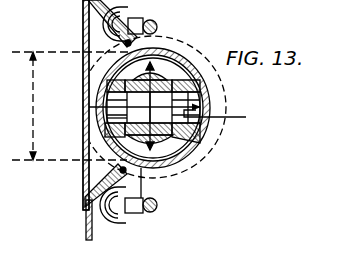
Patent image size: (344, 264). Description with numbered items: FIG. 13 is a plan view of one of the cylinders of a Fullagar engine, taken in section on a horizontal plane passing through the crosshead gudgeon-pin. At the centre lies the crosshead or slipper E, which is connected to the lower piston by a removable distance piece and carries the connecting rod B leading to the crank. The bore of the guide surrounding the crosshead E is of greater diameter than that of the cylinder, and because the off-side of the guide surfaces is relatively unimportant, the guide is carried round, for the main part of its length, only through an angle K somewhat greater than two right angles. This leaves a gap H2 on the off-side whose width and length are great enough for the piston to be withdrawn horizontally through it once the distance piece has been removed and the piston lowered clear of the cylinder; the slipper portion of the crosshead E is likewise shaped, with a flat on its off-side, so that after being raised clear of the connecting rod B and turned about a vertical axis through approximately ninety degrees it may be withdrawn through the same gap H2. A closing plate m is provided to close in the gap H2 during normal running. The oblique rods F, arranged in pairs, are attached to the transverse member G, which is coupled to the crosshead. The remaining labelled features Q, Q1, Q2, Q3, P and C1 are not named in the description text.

The angle K is at (216, 149).
The crosshead E is at (168, 80).
The hub Q is at (162, 140).
The upper bearing Q1 is at (150, 114).
The middle bearing part Q2 is at (118, 102).
The lower bearing part Q3 is at (104, 115).
The pressure direction P is at (224, 118).
The closing plate m is at (80, 181).
The connecting rod B is at (163, 50).
The frame member C1 is at (86, 229).
The transverse member G is at (122, 222).
The oblique rods F is at (135, 213).
The gap H2 is at (69, 106).